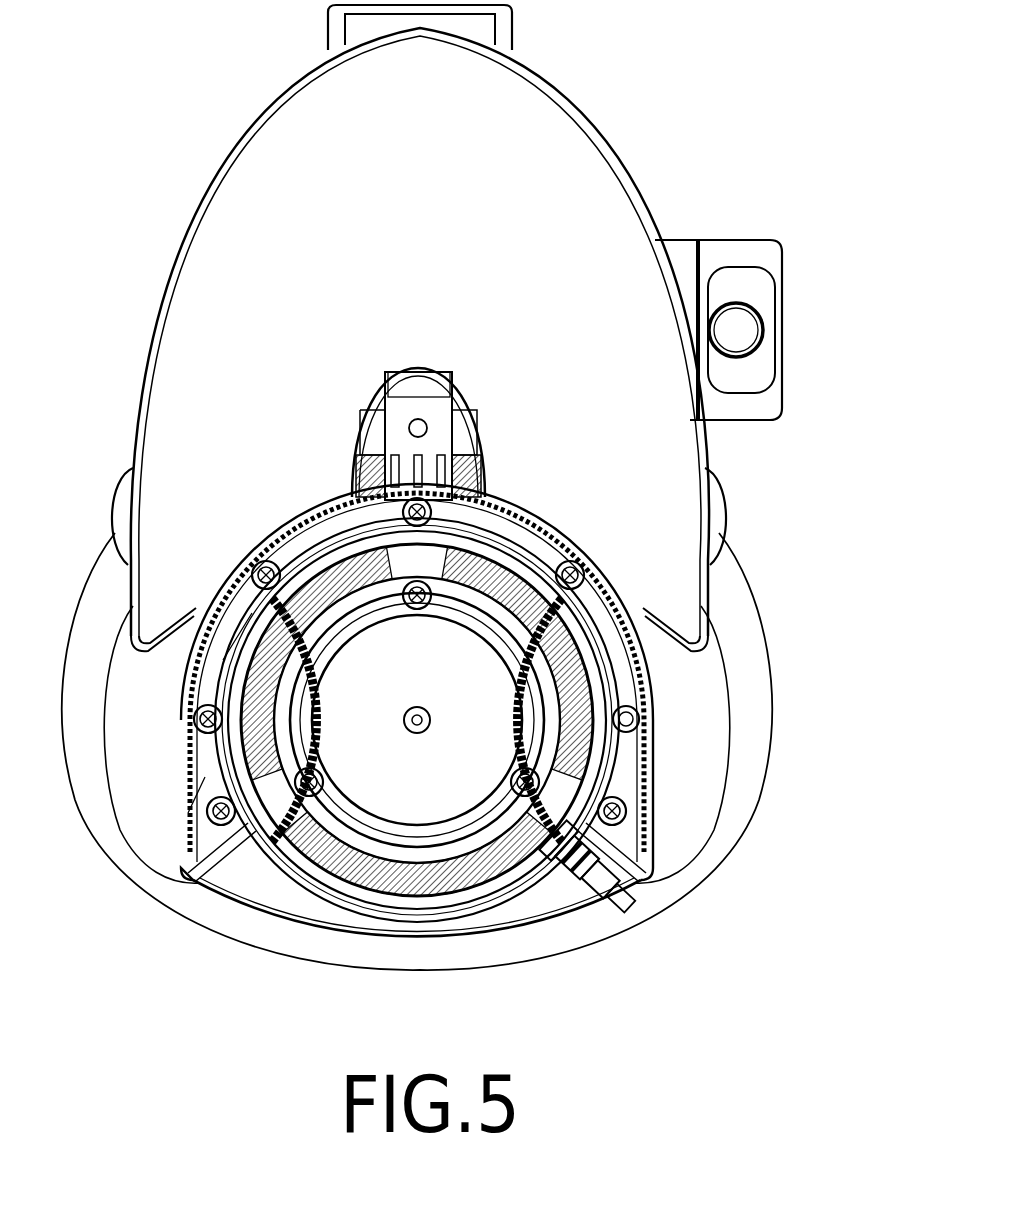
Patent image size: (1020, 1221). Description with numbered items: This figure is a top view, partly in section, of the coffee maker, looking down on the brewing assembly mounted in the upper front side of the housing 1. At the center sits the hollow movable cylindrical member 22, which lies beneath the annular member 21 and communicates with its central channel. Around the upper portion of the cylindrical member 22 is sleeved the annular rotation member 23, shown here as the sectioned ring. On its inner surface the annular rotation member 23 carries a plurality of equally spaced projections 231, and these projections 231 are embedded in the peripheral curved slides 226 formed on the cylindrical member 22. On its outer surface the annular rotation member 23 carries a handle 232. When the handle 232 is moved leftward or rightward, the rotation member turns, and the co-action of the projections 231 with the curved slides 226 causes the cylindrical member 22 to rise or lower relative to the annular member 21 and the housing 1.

The housing 1 is at (245, 272).
The annular member 21 is at (205, 760).
The movable cylindrical member 22 is at (215, 790).
The annular rotation member 23 is at (470, 888).
The peripheral curved slides 226 is at (282, 820).
The projections 231 is at (370, 912).
The handle 232 is at (578, 876).